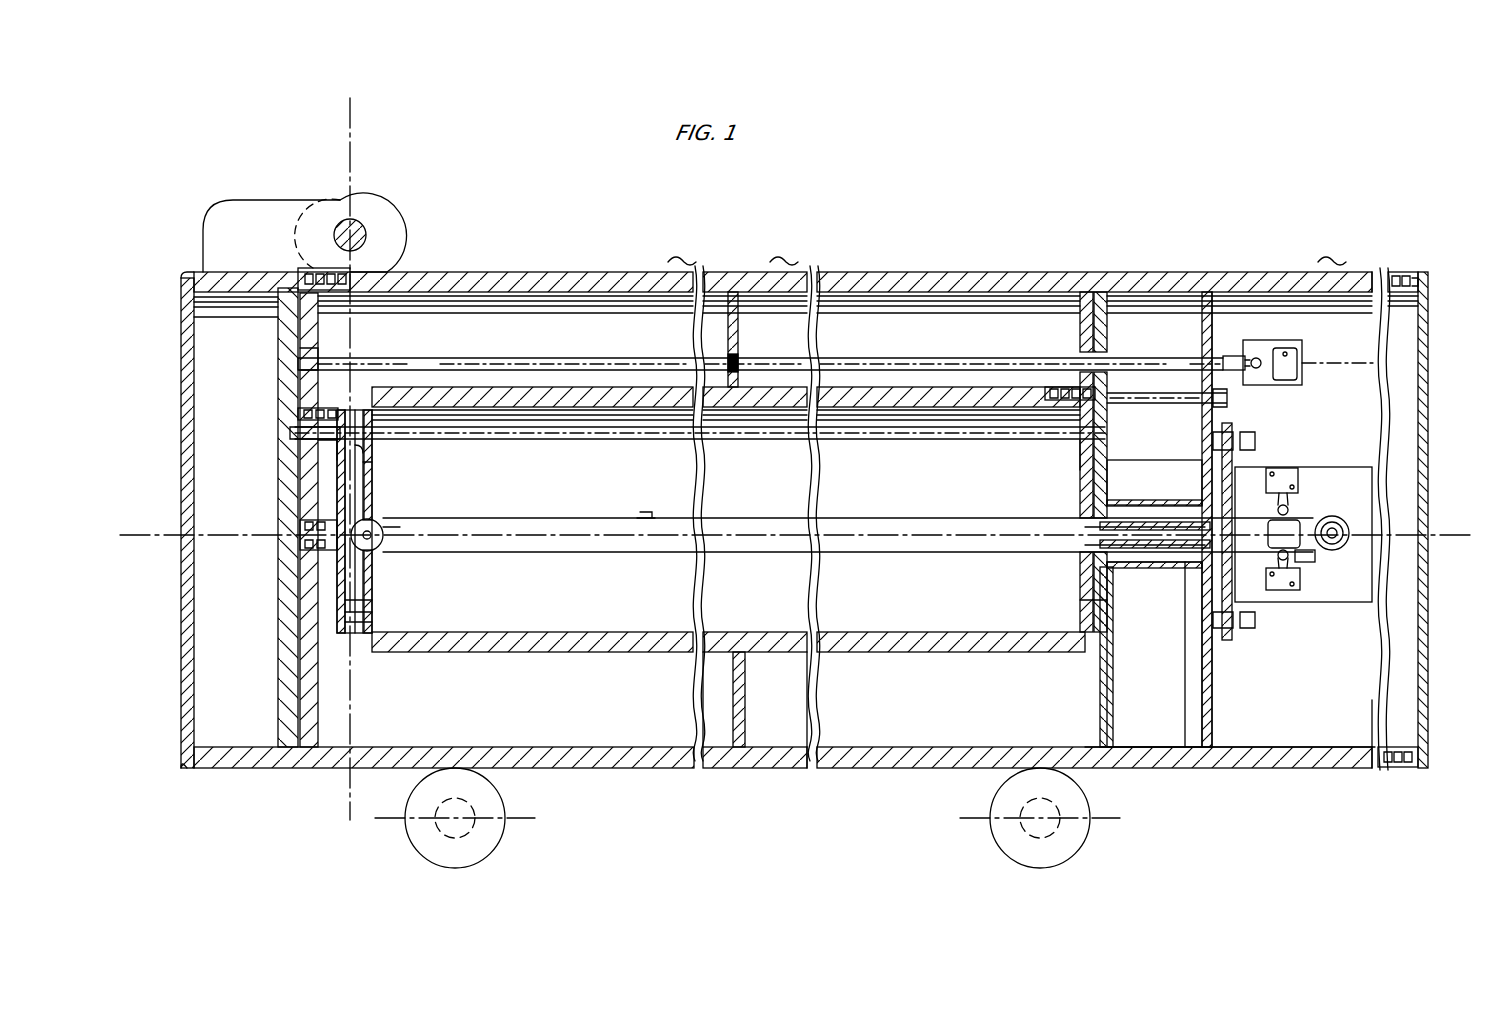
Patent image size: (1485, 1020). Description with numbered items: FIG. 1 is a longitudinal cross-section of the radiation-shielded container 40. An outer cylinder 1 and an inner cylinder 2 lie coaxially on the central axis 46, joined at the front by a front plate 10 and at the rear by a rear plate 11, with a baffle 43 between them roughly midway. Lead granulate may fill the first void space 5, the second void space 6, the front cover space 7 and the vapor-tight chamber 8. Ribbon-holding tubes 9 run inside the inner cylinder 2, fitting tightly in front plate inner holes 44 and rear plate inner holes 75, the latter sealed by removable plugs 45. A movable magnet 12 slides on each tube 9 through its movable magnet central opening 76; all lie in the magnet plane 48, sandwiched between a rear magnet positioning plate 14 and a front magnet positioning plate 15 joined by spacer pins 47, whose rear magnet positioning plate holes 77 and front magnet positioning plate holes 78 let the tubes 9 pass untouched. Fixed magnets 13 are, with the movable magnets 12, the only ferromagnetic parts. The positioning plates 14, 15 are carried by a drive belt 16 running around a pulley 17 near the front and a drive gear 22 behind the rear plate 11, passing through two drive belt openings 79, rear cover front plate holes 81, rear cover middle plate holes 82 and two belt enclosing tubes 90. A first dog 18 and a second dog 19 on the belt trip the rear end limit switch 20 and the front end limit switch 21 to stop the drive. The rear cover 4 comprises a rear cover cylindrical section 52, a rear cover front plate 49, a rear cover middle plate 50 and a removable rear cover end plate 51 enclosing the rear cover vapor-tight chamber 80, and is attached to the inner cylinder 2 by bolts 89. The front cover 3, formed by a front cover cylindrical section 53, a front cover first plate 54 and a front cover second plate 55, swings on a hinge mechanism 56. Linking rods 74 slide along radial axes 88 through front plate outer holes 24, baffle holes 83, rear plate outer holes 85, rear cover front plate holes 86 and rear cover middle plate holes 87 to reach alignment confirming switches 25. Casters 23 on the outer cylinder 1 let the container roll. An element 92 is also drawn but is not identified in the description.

The outer cylinder 1 is at (742, 770).
The inner cylinder 2 is at (598, 652).
The front cover 3 is at (183, 712).
The rear cover 4 is at (1345, 770).
The first void space 5 is at (575, 305).
The second void space 6 is at (893, 300).
The front cover space 7 is at (215, 672).
The vapor-tight chamber 8 is at (1165, 740).
The ribbon-holding tube 9 is at (600, 432).
The front plate 10 is at (305, 498).
The rear plate 11 is at (1078, 600).
The movable magnet 12 is at (378, 497).
The fixed magnet 13 is at (330, 415).
The rear magnet positioning plate 14 is at (372, 593).
The front magnet positioning plate 15 is at (335, 580).
The drive belt 16 is at (548, 552).
The pulley 17 is at (375, 548).
The first dog 18 is at (643, 512).
The second dog 19 is at (1305, 558).
The rear end limit switch 20 is at (1300, 510).
The front end limit switch 21 is at (1282, 592).
The drive gear 22 is at (1336, 518).
The caster 23 is at (418, 848).
The front plate outer hole 24 is at (310, 353).
The alignment confirming switch 25 is at (1265, 345).
The radiation-shielded container 40 is at (802, 780).
The baffle 43 is at (740, 318).
The front plate inner hole 44 is at (298, 437).
The removable plug 45 is at (1098, 430).
The central axis 46 is at (1460, 530).
The spacer pin 47 is at (372, 618).
The magnet plane 48 is at (353, 113).
The rear cover front plate 49 is at (1113, 690).
The rear cover middle plate 50 is at (1215, 700).
The rear cover end plate 51 is at (1428, 632).
The rear cover cylindrical section 52 is at (1320, 290).
The front cover cylindrical section 53 is at (232, 765).
The front cover first plate 54 is at (181, 632).
The front cover second plate 55 is at (284, 615).
The hinge mechanism 56 is at (378, 212).
The linking rod 74 is at (437, 358).
The rear plate inner hole 75 is at (1075, 445).
The movable magnet central opening 76 is at (372, 470).
The rear magnet positioning plate hole 77 is at (375, 447).
The front magnet positioning plate hole 78 is at (340, 445).
The drive belt opening 79 is at (1100, 515).
The rear cover vapor-tight chamber 80 is at (1303, 725).
The rear cover front plate hole 81 is at (1120, 500).
The rear cover middle plate hole 82 is at (1186, 565).
The baffle hole 83 is at (740, 355).
The rear plate outer hole 85 is at (1078, 358).
The rear cover front plate hole 86 is at (1105, 358).
The rear cover middle plate hole 87 is at (1212, 360).
The radial axis 88 is at (1330, 362).
The bolt 89 is at (1228, 398).
The belt enclosing tube 90 is at (1150, 500).
The mounting plate 92 is at (1182, 500).